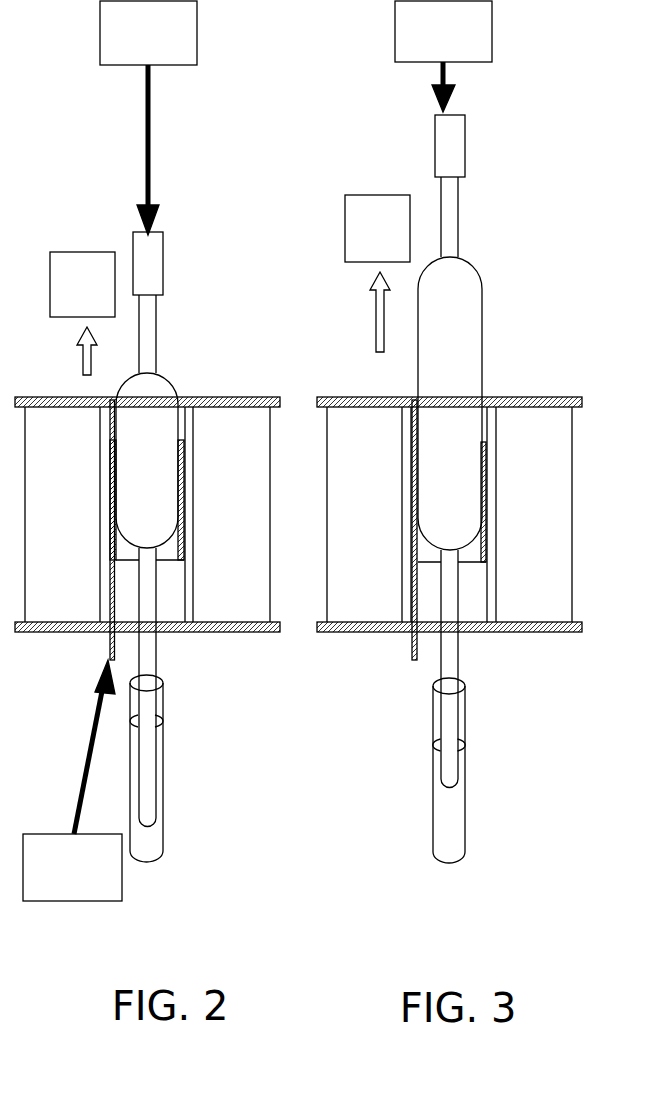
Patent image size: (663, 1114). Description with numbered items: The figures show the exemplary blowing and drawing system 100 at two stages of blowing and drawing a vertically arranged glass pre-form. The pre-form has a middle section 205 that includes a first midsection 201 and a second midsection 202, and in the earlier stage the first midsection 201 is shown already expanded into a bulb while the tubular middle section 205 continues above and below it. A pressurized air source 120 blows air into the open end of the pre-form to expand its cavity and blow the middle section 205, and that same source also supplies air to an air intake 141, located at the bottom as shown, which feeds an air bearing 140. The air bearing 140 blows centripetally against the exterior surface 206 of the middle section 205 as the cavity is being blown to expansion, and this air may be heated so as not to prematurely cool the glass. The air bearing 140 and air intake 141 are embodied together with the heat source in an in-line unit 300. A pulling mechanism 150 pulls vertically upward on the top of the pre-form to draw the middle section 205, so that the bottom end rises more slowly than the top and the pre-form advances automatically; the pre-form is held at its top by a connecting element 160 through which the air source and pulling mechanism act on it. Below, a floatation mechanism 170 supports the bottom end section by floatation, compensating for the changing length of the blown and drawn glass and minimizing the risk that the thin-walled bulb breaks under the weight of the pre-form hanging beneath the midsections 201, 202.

In FIG. 2, the blowing and drawing system 100 is at (133, 931).
In FIG. 3, the blowing and drawing system 100 is at (431, 931).
In FIG. 2, the pressurized air source 120 is at (110, 451).
In FIG. 3, the pressurized air source 120 is at (443, 56).
In FIG. 2, the air bearing 140 is at (119, 474).
In FIG. 2, the air intake 141 is at (105, 658).
In FIG. 2, the pulling mechanism 150 is at (82, 313).
In FIG. 3, the pulling mechanism 150 is at (377, 273).
In FIG. 3, the collet 160 is at (462, 138).
In FIG. 3, the floatation mechanism 170 is at (465, 788).
In FIG. 2, the first midsection 201 is at (156, 383).
In FIG. 2, the second midsection 202 is at (150, 437).
In FIG. 2, the middle section 205 is at (157, 362).
In FIG. 2, the exterior surface 206 is at (119, 498).
In FIG. 3, the in-line unit 300 is at (503, 641).